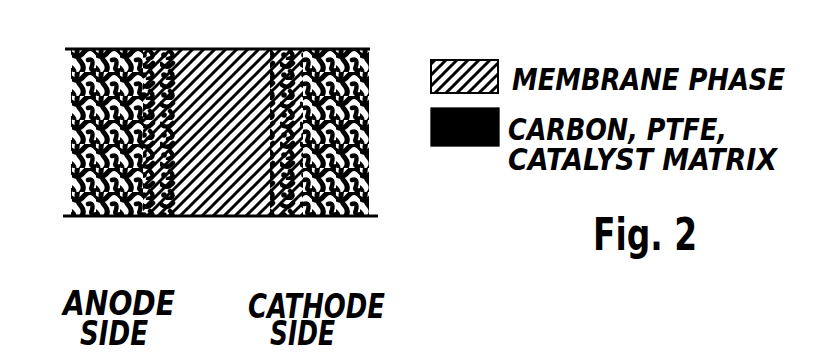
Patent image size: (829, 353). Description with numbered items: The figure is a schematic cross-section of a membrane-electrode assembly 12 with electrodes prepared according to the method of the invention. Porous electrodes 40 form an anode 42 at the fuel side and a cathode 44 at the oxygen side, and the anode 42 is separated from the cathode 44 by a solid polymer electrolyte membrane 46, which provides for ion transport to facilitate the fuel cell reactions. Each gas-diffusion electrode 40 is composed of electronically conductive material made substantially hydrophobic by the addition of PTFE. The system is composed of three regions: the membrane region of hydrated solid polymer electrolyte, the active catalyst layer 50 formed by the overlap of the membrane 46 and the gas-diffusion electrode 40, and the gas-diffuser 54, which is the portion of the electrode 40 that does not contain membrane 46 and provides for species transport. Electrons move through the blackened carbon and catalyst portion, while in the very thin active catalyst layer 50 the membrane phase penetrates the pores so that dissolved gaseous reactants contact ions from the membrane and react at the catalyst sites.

The membrane-electrode assembly 12 is at (375, 268).
The porous electrodes 40 is at (231, 111).
The anode 42 is at (133, 48).
The cathode 44 is at (317, 48).
The solid polymer electrolyte membrane 46 is at (206, 217).
The active catalyst layer 50 is at (177, 37).
The gas-diffuser 54 is at (143, 220).